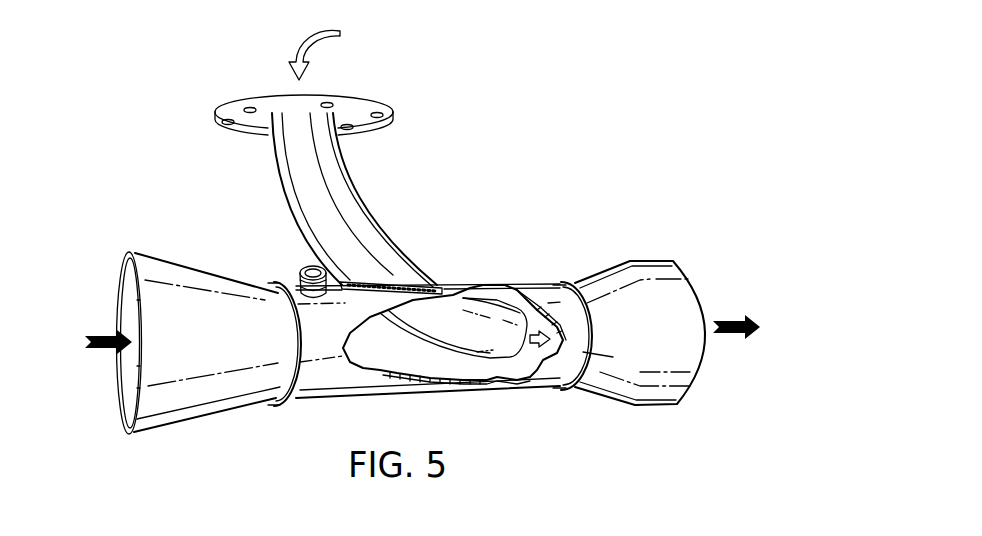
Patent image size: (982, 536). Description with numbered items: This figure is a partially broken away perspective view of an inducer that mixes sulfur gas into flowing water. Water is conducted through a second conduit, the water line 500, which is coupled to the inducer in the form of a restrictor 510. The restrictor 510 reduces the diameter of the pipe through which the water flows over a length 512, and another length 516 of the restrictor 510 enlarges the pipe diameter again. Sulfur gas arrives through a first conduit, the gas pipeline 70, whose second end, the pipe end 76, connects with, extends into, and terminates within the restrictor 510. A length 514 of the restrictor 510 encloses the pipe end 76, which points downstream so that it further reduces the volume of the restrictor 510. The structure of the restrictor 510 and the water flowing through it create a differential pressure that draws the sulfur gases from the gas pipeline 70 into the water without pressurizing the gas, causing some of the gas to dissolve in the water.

The water line 500 is at (148, 257).
The length of restrictor 516 is at (223, 270).
The length of restrictor 514 is at (348, 390).
The restrictor 510 is at (468, 295).
The pipe end 76 is at (500, 343).
The length 512 is at (605, 268).
The gas pipeline 70 is at (372, 227).